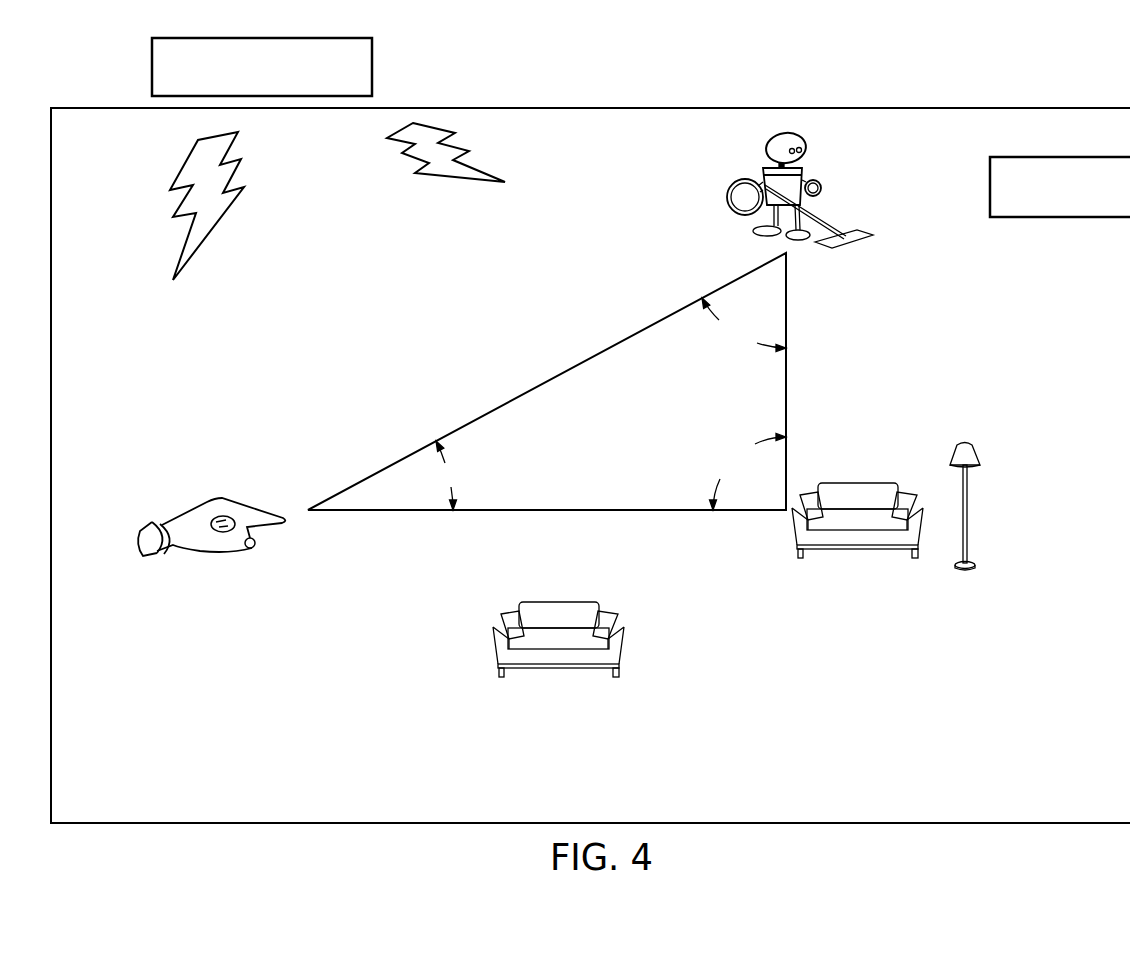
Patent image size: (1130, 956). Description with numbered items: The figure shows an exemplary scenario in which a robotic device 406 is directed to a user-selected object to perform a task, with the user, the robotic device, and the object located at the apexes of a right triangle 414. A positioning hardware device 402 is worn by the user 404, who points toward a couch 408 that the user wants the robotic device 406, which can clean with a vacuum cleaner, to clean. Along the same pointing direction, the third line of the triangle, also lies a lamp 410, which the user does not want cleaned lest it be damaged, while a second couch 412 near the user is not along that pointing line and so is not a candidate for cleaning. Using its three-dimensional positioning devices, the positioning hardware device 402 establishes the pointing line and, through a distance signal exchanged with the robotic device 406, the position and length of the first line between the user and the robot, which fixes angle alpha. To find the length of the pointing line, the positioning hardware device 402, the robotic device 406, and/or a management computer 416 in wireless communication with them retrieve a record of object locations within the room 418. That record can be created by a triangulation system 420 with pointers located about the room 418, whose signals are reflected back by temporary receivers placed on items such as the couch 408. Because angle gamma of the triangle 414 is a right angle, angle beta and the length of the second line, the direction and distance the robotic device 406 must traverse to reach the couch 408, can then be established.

The positioning hardware device 402 is at (150, 523).
The user 404 is at (255, 558).
The robotic device 406 is at (838, 187).
The couch 408 is at (850, 562).
The lamp 410 is at (993, 543).
The couch 412 is at (558, 683).
The triangle 414 is at (598, 458).
The management computer 416 is at (372, 72).
The room 418 is at (128, 693).
The triangulation system 420 is at (1060, 217).